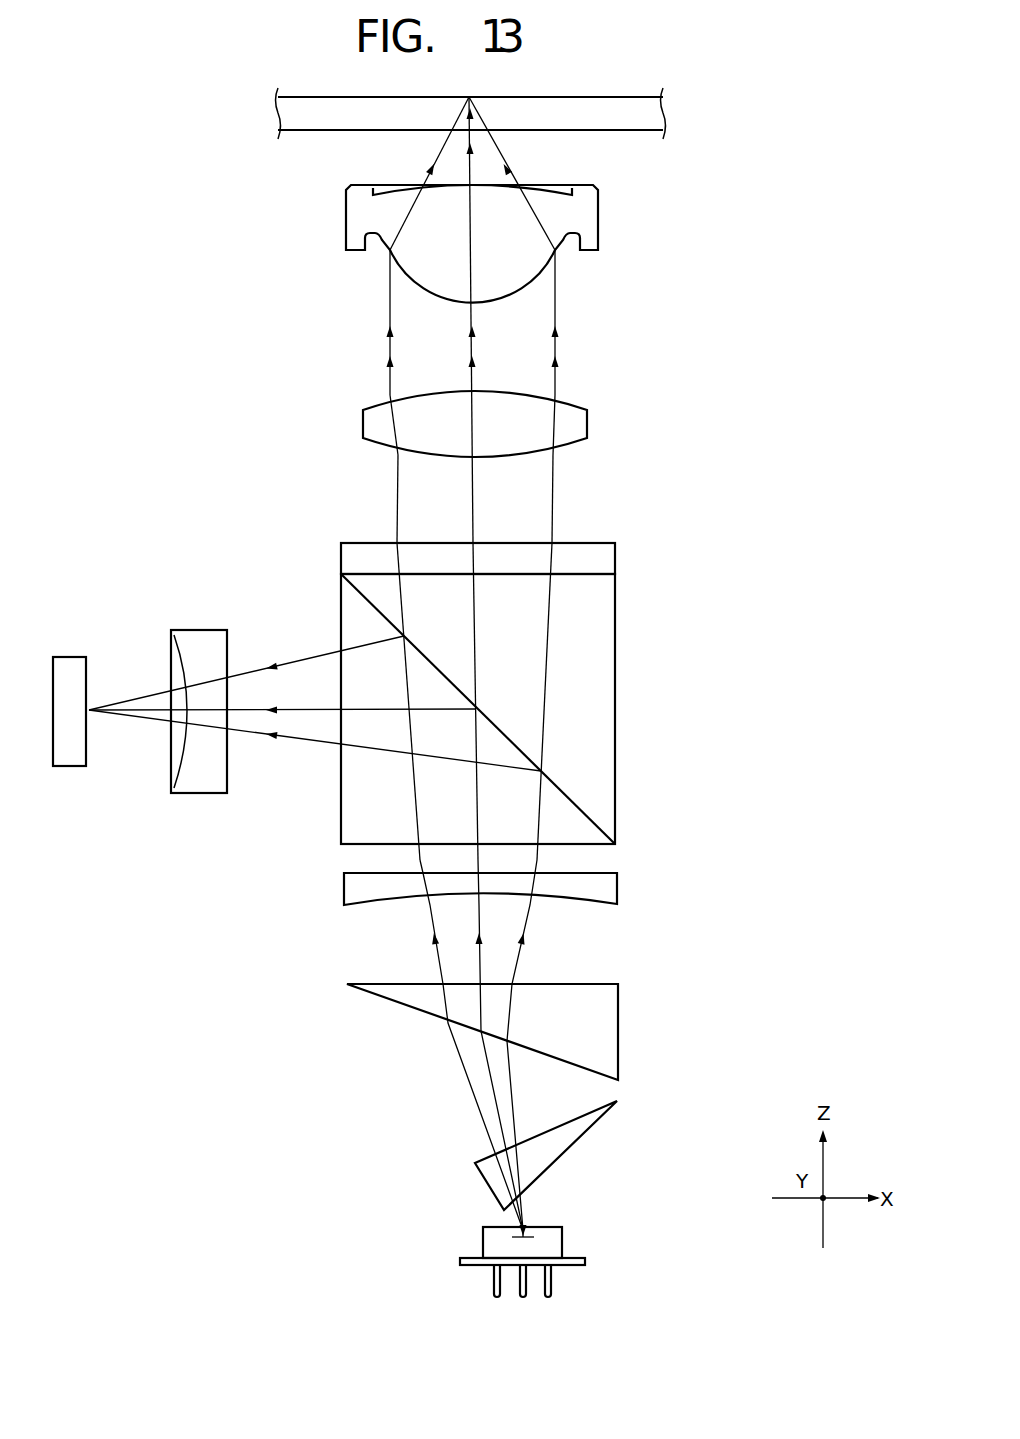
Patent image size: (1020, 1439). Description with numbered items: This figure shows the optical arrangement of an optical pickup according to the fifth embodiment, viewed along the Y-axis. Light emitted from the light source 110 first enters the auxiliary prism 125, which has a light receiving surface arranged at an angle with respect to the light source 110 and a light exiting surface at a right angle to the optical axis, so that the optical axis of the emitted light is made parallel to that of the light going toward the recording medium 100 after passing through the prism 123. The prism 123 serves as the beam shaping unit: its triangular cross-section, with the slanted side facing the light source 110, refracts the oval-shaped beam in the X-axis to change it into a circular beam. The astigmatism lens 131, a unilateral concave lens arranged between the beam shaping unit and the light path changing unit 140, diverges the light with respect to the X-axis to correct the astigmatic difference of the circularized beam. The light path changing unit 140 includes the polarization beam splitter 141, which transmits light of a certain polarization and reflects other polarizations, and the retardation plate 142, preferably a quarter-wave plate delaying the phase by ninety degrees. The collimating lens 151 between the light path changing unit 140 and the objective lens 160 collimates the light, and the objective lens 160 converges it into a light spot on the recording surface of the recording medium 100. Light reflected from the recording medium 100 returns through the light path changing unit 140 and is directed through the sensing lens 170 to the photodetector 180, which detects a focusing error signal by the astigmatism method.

The recording medium 100 is at (666, 116).
The objective lens 160 is at (598, 215).
The collimating lens 151 is at (579, 424).
The retardation plate 142 is at (601, 558).
The light path changing unit 140 is at (547, 693).
The polarization beam splitter 141 is at (606, 769).
The astigmatism lens 131 is at (606, 892).
The prism 123 is at (613, 1027).
The auxiliary prism 125 is at (618, 1100).
The light source 110 is at (558, 1237).
The sensing lens 170 is at (203, 788).
The photodetector 180 is at (70, 766).